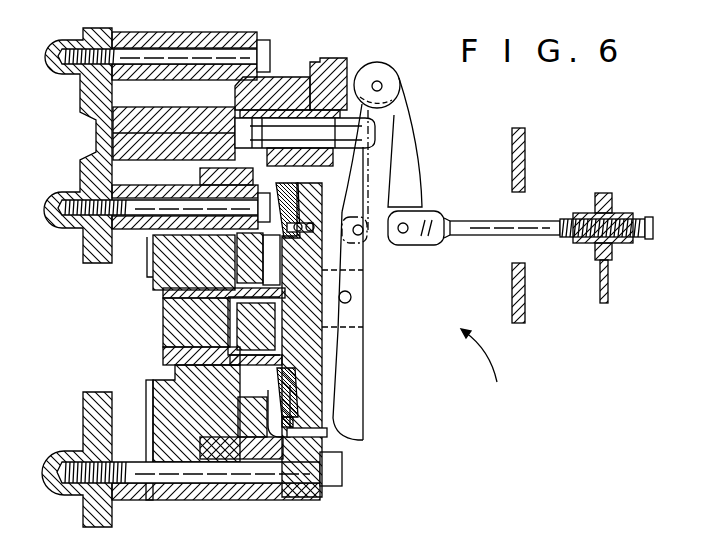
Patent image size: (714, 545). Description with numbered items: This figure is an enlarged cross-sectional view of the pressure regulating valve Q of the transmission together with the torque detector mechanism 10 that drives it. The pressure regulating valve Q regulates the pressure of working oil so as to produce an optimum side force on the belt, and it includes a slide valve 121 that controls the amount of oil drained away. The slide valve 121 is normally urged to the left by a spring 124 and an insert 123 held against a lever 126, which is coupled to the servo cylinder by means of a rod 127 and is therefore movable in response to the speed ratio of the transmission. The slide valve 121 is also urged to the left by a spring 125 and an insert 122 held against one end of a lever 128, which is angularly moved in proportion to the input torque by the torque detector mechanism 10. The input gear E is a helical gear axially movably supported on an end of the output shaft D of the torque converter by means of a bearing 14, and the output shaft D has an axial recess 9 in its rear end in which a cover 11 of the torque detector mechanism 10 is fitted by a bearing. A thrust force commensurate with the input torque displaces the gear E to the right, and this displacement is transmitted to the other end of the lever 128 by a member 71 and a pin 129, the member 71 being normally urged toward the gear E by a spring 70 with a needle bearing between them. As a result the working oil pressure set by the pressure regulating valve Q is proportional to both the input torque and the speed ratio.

The slide valve 121 is at (268, 100).
The spring 125 is at (313, 100).
The spring 124 is at (355, 76).
The insert 123 is at (380, 128).
The insert 122 is at (378, 135).
The lever 126 is at (412, 173).
The rod 127 is at (528, 230).
The lever 128 is at (369, 262).
The cover 11 is at (307, 308).
The bearing 14 is at (170, 300).
The axial recess 9 is at (253, 358).
The output shaft D is at (165, 349).
The input gear E is at (254, 425).
The torque detector mechanism 10 is at (330, 439).
The spring 70 is at (297, 381).
The member 71 is at (300, 417).
The pin 129 is at (327, 432).
The pressure regulating valve Q is at (482, 367).